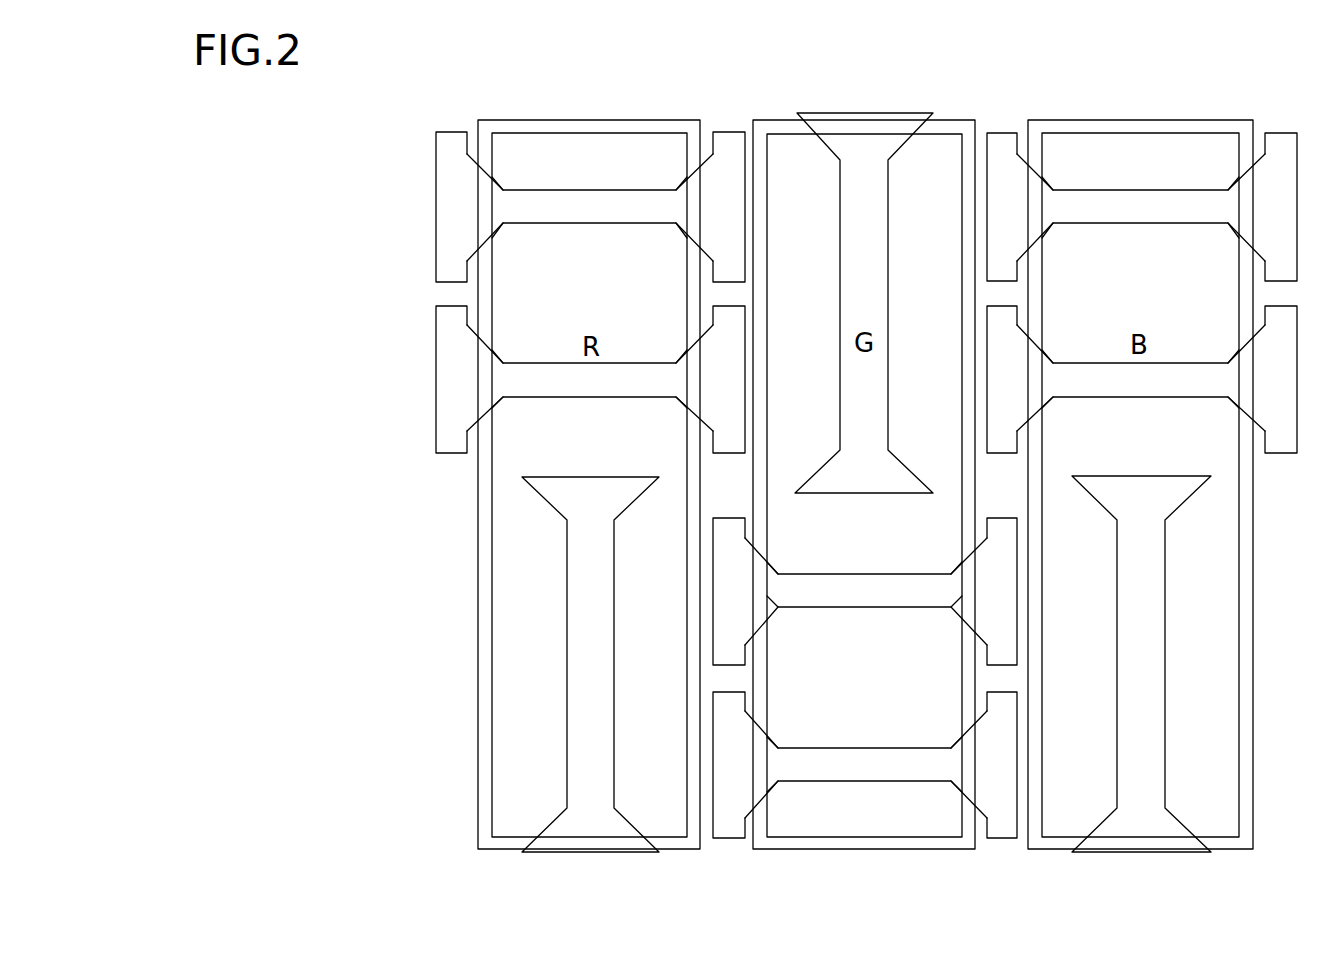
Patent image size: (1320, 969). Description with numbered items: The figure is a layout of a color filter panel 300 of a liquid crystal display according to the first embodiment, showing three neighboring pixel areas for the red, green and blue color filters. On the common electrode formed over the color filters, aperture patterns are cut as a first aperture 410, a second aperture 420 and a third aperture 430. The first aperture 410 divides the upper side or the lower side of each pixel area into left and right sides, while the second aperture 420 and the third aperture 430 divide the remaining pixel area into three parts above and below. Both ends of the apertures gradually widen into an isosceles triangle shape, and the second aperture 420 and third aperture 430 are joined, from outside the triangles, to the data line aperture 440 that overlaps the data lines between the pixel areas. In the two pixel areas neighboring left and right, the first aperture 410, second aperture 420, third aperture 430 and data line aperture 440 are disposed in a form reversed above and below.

The color filter panel 300 is at (483, 606).
The first aperture 410 is at (891, 424).
The second aperture 420 is at (606, 354).
The third aperture 430 is at (584, 188).
The data line aperture 440 is at (737, 148).